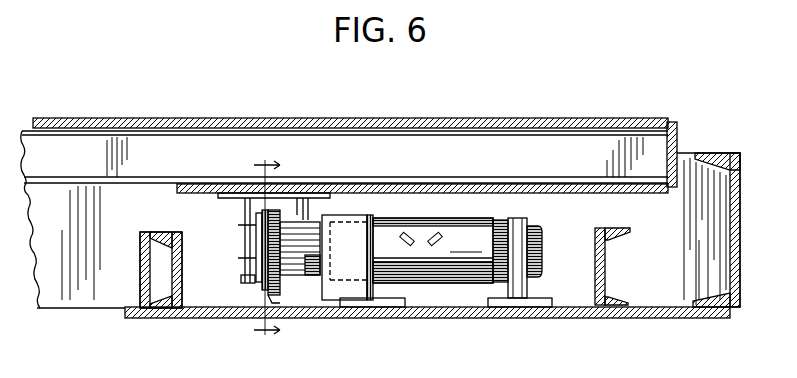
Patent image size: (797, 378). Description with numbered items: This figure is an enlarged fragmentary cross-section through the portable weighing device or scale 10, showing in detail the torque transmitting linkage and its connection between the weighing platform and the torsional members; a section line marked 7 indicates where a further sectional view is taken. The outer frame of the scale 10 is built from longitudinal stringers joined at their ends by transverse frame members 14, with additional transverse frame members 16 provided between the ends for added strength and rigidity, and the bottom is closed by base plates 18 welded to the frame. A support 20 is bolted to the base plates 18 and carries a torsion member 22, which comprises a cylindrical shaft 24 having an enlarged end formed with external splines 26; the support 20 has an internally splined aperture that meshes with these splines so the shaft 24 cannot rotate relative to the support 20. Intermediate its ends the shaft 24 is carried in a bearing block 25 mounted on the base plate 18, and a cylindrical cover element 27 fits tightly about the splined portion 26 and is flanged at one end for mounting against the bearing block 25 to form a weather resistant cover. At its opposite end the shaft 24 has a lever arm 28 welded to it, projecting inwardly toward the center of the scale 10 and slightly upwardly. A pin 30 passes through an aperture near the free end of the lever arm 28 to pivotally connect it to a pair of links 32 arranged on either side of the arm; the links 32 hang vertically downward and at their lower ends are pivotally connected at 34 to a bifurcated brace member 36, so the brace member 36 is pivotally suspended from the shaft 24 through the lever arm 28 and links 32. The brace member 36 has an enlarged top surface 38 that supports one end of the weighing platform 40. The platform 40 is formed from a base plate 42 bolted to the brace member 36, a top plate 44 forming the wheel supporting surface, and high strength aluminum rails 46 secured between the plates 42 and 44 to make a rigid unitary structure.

The portable weighing device or scale 10 is at (375, 193).
The transverse frame member 14 is at (730, 219).
The additional transverse frame member 16 is at (155, 235).
The base plate 18 is at (536, 306).
The support 20 is at (538, 248).
The torsion member 22 is at (437, 273).
The cylindrical shaft 24 is at (475, 232).
The bearing block 25 is at (358, 218).
The external splines 26 is at (541, 272).
The cylindrical cover element 27 is at (438, 226).
The lever arm 28 is at (280, 300).
The pin 30 is at (258, 222).
The link 32 is at (256, 240).
The pivotal connection 34 is at (241, 278).
The bifurcated brace member 36 is at (250, 258).
The enlarged top surface 38 is at (218, 197).
The weighing platform 40 is at (305, 118).
The base plate of weighing platform 42 is at (373, 184).
The top plate 44 is at (395, 118).
The structural aluminum rail 46 is at (474, 128).
The section line 7- 7 is at (267, 248).